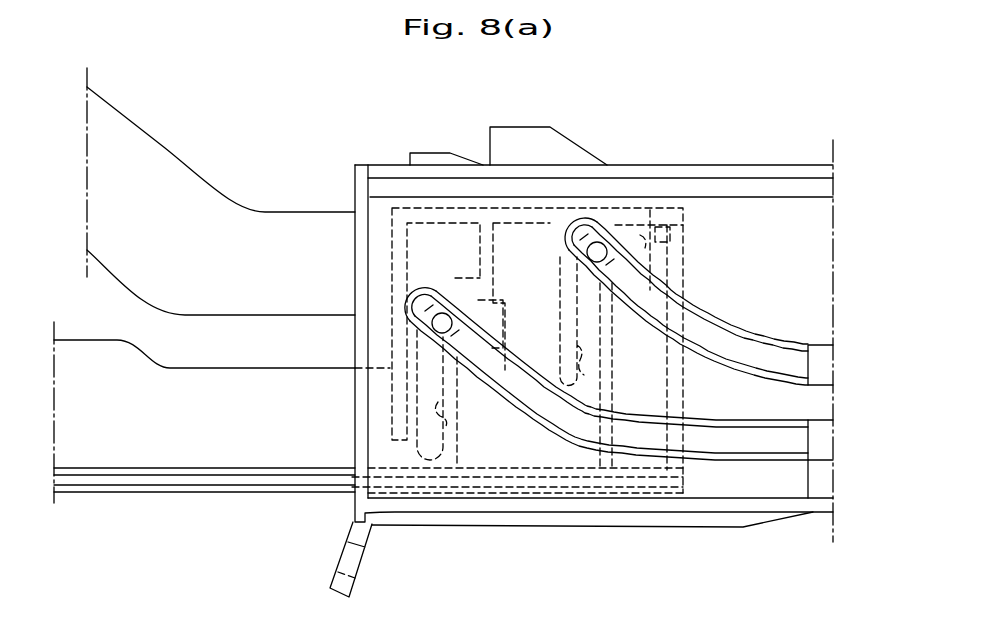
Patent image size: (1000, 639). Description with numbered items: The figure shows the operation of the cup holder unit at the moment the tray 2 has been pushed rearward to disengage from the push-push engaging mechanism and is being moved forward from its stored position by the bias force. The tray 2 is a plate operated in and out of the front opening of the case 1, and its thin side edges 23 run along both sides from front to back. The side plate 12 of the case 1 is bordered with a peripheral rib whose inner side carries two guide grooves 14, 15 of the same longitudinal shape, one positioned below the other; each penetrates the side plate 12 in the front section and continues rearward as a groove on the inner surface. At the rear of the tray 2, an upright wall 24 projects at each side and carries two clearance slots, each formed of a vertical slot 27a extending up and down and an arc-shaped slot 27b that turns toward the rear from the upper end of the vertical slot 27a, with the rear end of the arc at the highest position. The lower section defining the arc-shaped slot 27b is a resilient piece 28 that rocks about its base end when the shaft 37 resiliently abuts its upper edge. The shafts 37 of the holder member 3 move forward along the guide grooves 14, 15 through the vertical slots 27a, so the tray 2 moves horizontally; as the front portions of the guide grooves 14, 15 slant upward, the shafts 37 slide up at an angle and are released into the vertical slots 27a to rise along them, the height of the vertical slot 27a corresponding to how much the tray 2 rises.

The case 1 is at (784, 160).
The tray 2 is at (214, 507).
The holder member 3 is at (182, 158).
The side plate 12 is at (378, 205).
The guide groove 14 is at (716, 453).
The guide groove 15 is at (775, 371).
The side edge 23 is at (123, 480).
The upright wall 24 is at (680, 212).
The vertical slot 27a is at (460, 420).
The arc-shaped slot 27b is at (632, 223).
The resilient piece 28 is at (643, 233).
The shaft 37 is at (448, 312).